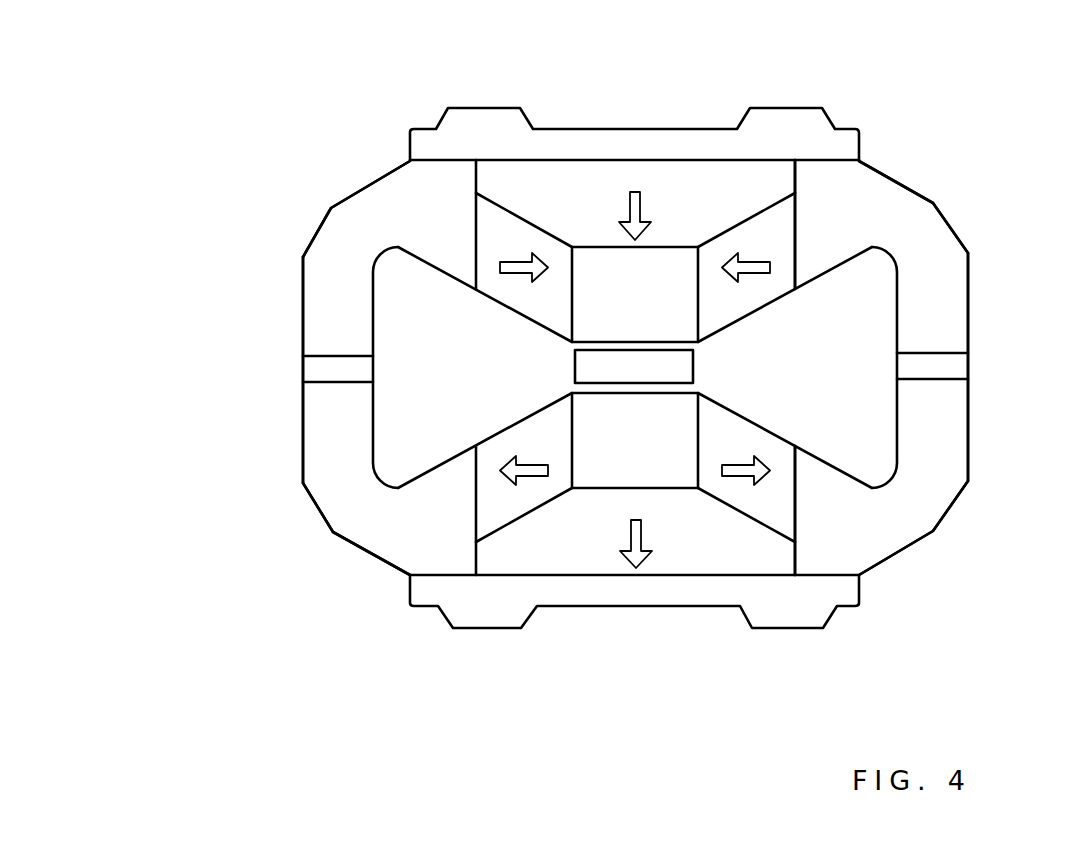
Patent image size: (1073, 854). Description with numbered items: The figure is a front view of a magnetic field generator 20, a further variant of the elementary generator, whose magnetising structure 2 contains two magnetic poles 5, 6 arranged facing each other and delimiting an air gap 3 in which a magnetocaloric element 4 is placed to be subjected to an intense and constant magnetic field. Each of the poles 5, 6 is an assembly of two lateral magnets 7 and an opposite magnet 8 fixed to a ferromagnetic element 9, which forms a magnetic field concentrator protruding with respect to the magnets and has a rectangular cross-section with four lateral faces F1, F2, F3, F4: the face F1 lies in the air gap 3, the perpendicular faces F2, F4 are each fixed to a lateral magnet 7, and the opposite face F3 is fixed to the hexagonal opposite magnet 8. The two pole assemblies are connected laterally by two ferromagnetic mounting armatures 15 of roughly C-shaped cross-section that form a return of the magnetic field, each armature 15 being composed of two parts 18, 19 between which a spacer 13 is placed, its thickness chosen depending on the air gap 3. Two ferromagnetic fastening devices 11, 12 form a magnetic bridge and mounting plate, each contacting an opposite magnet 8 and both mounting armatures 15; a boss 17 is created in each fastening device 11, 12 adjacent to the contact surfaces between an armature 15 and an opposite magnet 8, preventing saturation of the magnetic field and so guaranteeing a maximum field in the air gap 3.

The magnetising structure 2 is at (1017, 328).
The air gap 3 is at (697, 447).
The magnetocaloric element 4 is at (645, 355).
The first magnetic pole 5 is at (808, 221).
The second magnetic pole 6 is at (813, 512).
The lateral magnet 7 is at (490, 228).
The opposite magnet 8 is at (748, 180).
The ferromagnetic element 9 is at (678, 273).
The fastening device 11 is at (555, 137).
The fastening device 12 is at (543, 590).
The spacer 13 is at (343, 372).
The mounting armature 15 is at (228, 300).
The boss 17 is at (490, 125).
The part of mounting armature 18 is at (345, 343).
The part of mounting armature 19 is at (335, 417).
The magnetic field generator 20 is at (917, 112).
The lateral face F1 is at (613, 392).
The perpendicular face F2 is at (570, 273).
The opposite face F3 is at (605, 247).
The perpendicular face F4 is at (695, 305).